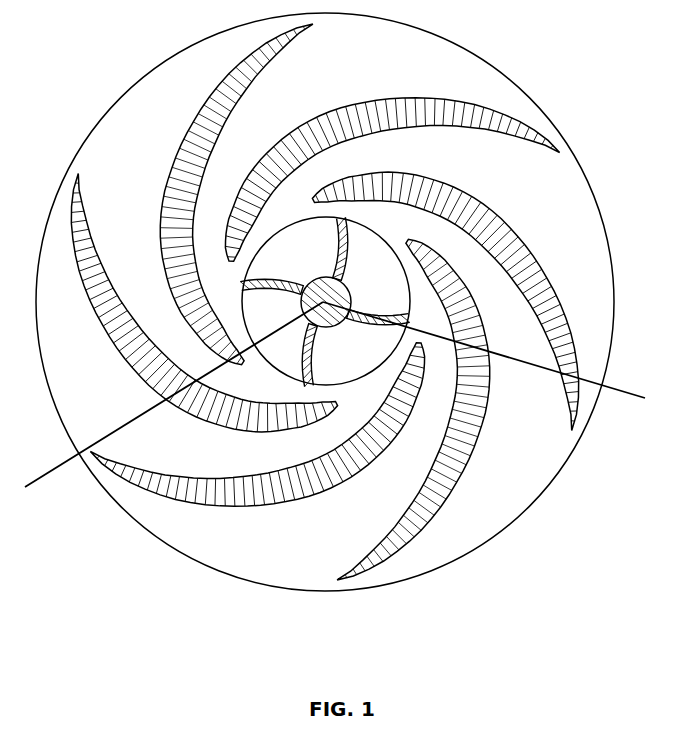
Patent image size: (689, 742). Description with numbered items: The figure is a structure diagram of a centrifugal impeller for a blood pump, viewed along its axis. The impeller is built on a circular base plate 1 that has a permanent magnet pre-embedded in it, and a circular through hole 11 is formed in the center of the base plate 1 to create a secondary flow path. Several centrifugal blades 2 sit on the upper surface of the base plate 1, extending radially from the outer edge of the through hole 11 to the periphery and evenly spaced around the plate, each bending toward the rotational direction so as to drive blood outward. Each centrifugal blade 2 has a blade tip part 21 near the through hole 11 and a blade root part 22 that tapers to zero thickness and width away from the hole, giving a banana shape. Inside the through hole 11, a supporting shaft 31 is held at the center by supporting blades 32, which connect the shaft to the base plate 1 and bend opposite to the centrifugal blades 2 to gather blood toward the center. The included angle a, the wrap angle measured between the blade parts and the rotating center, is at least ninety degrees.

The base plate 1 is at (483, 88).
The through hole 11 is at (268, 258).
The centrifugal blade 2 is at (325, 331).
The blade tip part 21 is at (420, 353).
The blade root part 22 is at (120, 462).
The supporting shaft 31 is at (317, 290).
The supporting blade 32 is at (342, 245).
The included angle a is at (335, 394).